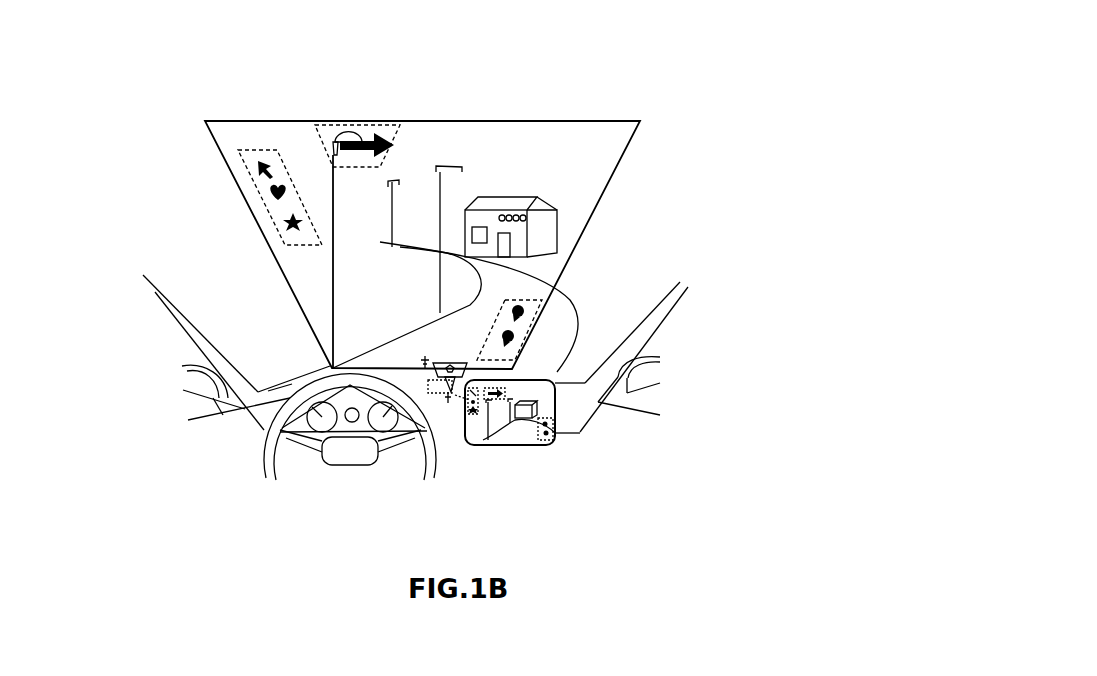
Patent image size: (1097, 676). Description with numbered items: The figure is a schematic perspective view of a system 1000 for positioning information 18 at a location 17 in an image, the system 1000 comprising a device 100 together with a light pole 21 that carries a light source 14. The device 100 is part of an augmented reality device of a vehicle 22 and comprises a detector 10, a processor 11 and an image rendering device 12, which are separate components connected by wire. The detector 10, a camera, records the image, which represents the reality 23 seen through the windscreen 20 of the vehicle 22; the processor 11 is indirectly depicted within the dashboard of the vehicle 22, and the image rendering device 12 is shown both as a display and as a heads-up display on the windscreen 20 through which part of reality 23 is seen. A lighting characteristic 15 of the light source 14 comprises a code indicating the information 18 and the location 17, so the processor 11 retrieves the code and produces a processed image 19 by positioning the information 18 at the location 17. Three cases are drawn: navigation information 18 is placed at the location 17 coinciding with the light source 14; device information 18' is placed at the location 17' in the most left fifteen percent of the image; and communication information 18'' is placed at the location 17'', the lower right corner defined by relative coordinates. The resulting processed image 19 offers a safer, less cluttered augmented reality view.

The system 1000 is at (748, 84).
The device 100 is at (683, 261).
The detector 10 is at (437, 355).
The processor 11 is at (438, 406).
The image rendering device 12 is at (220, 117).
The processed image 19 is at (510, 466).
The light source 14 is at (333, 117).
The lighting characteristic 15 is at (347, 133).
The location 17 is at (334, 131).
The location 17' is at (245, 197).
The location 17'' is at (549, 315).
The information 18 is at (369, 125).
The device information 18' is at (254, 205).
The communication information 18'' is at (560, 332).
The windscreen 20 is at (374, 344).
The reality 23 is at (170, 265).
The light pole 21 is at (346, 271).
The vehicle 22 is at (150, 410).